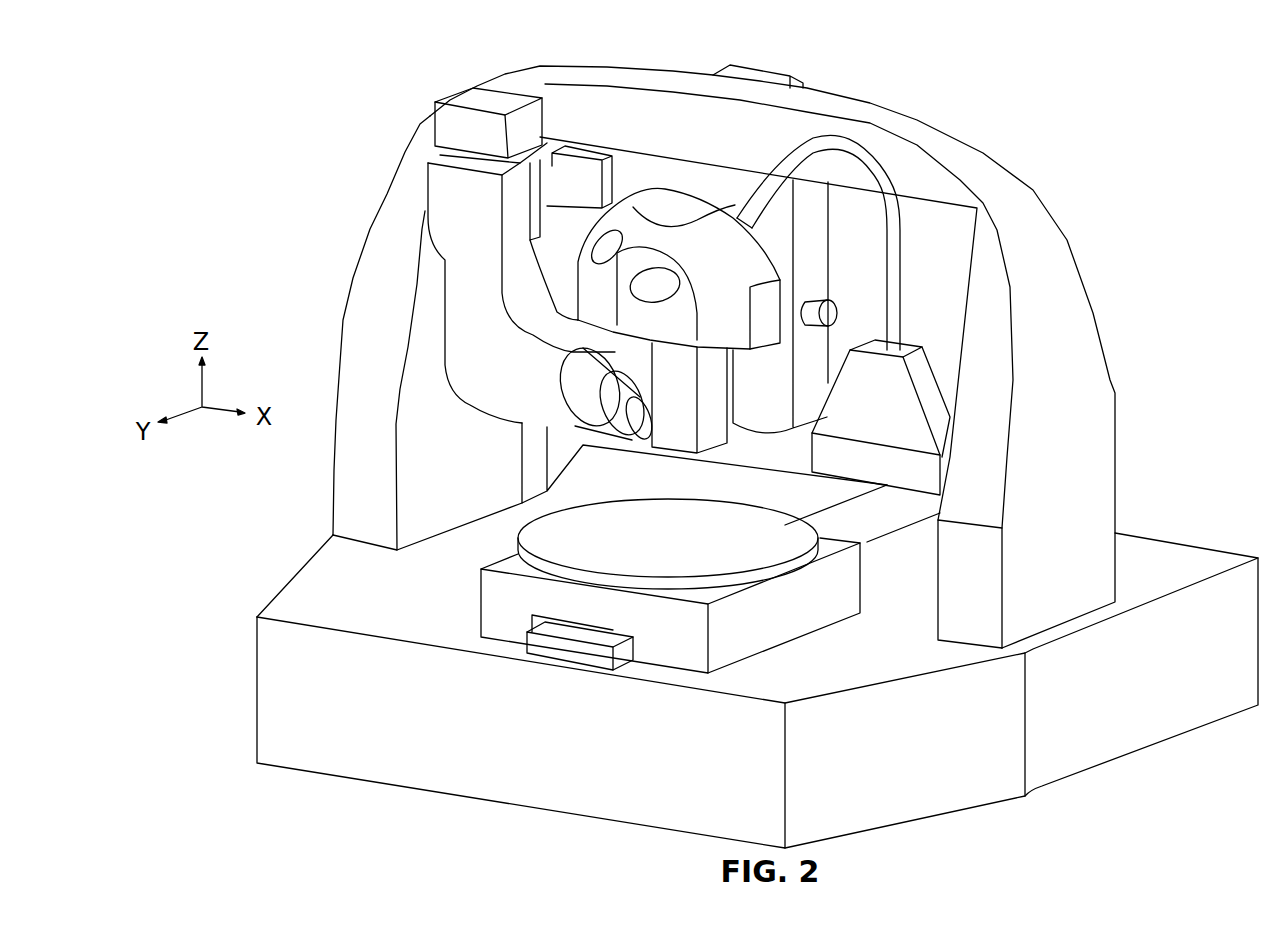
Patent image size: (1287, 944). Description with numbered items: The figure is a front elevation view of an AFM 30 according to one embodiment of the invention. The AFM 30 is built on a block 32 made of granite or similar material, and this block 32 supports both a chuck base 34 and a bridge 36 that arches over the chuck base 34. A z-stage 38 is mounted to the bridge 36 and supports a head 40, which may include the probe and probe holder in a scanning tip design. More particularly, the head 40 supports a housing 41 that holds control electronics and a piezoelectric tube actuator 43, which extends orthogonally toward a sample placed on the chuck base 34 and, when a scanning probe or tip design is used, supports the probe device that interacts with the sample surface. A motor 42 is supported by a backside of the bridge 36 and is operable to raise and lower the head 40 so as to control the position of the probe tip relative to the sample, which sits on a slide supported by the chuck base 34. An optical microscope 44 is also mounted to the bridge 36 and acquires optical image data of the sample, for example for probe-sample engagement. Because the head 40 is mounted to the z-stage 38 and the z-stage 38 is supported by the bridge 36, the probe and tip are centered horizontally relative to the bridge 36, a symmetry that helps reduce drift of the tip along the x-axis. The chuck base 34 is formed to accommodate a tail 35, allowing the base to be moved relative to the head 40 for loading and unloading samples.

The AFM 30 is at (320, 70).
The block 32 is at (953, 797).
The chuck base 34 is at (730, 637).
The tail 35 is at (566, 646).
The bridge 36 is at (1018, 212).
The z-stage 38 is at (785, 263).
The head 40 is at (640, 182).
The housing 41 is at (708, 318).
The motor 42 is at (770, 78).
The piezoelectric tube actuator 43 is at (710, 433).
The optical microscope 44 is at (465, 260).